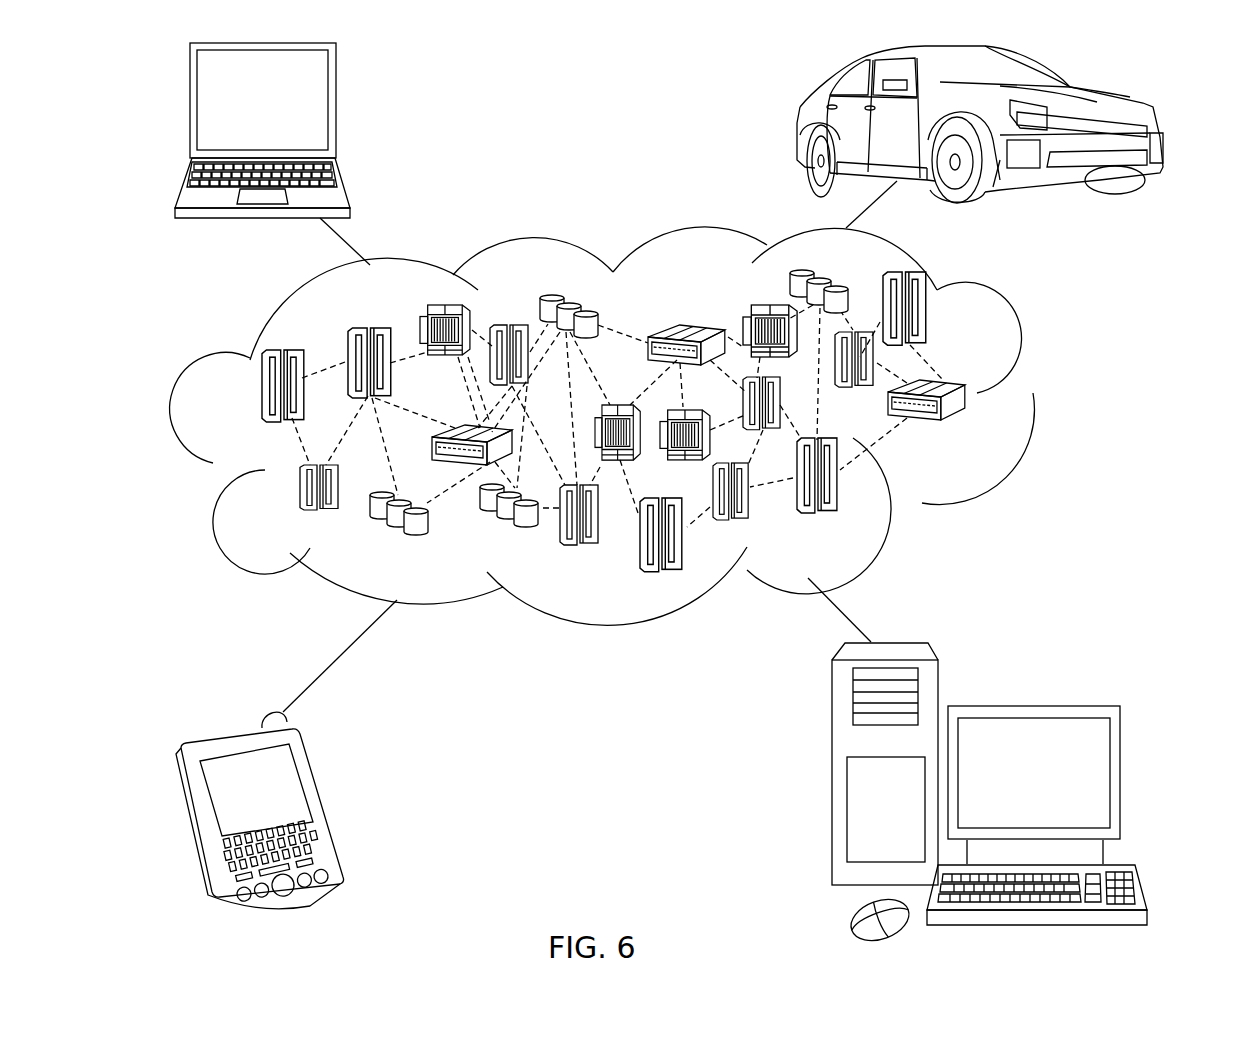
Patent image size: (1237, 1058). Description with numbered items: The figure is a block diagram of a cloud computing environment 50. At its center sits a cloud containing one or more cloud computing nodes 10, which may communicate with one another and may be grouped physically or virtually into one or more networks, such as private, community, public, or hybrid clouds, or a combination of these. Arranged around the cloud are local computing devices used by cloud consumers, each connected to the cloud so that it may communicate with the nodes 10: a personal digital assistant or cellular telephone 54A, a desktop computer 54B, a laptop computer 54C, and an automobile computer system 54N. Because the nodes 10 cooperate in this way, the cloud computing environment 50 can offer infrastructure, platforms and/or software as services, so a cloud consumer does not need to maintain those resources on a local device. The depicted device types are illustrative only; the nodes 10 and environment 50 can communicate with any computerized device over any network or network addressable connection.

The cloud computing nodes 10 is at (973, 430).
The cloud computing environment 50 is at (1033, 397).
The personal digital assistant or cellular telephone 54A is at (330, 806).
The desktop computer 54B is at (1030, 705).
The laptop computer 54C is at (336, 109).
The automobile computer system 54N is at (797, 121).